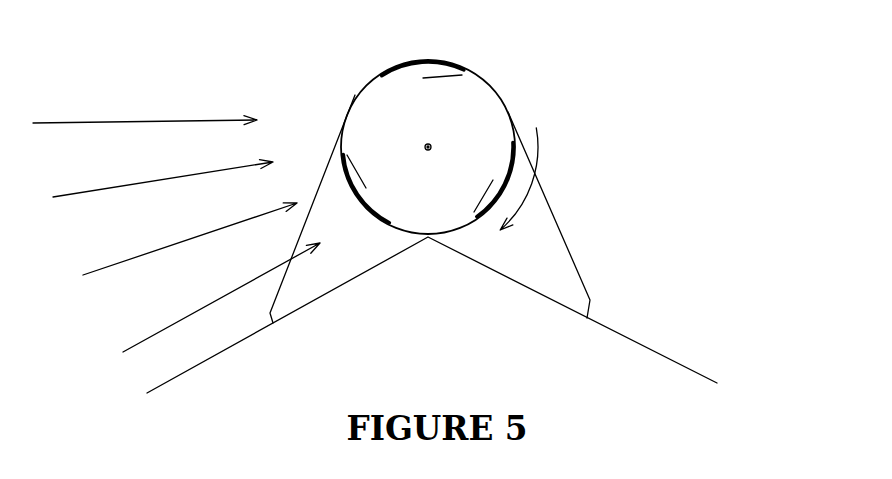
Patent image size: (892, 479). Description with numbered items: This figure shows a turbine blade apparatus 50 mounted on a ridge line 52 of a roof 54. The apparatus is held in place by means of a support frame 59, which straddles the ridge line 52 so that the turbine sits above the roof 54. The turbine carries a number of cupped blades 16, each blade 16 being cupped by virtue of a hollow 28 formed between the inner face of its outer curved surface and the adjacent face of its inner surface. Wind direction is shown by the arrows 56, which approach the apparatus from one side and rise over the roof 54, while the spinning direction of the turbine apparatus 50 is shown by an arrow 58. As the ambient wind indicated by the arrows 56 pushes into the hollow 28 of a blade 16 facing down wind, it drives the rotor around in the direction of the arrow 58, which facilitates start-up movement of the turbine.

The blade 16 is at (428, 122).
The hollow 28 is at (497, 173).
The turbine blade apparatus 50 is at (513, 67).
The ridge line 52 is at (448, 209).
The roof 54 is at (553, 300).
The arrows 56 is at (176, 234).
The arrow 58 is at (535, 178).
The support frame 59 is at (578, 272).